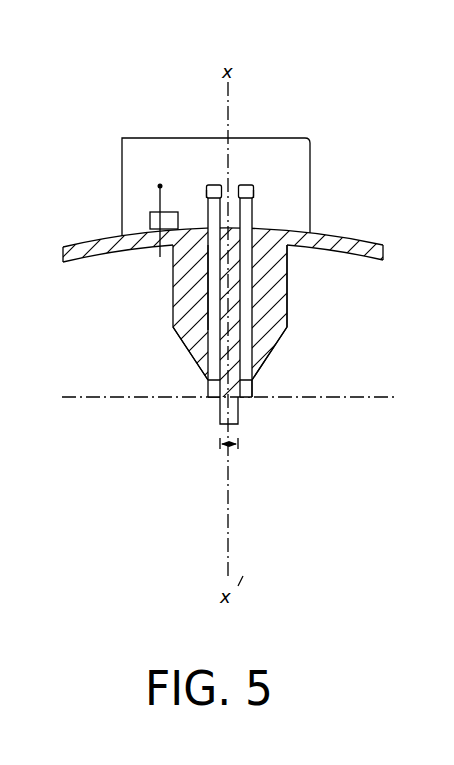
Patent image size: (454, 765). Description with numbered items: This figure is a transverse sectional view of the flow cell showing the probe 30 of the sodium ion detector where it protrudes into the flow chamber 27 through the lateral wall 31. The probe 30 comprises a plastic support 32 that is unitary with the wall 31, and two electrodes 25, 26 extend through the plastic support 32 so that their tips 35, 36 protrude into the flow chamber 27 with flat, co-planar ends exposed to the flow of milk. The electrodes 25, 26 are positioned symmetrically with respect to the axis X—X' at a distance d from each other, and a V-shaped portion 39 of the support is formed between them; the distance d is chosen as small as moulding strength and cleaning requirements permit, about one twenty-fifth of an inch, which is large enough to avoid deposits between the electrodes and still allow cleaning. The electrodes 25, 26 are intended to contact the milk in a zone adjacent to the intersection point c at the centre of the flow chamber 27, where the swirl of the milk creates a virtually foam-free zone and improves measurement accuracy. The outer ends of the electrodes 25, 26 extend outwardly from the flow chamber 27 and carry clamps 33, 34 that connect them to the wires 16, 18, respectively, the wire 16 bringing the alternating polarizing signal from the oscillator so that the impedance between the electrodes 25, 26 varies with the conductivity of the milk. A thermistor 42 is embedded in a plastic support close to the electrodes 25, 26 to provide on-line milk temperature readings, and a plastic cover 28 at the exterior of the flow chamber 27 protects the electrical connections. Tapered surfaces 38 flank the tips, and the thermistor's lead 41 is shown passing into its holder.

The wire 16 is at (213, 185).
The wire 18 is at (249, 185).
The electrode 25 is at (208, 268).
The electrode 26 is at (289, 284).
The flow chamber 27 is at (341, 236).
The plastic cover 28 is at (311, 148).
The probe 30 is at (297, 107).
The lateral wall 31 is at (373, 242).
The plastic support 32 is at (187, 312).
The clamp 33 is at (205, 196).
The clamp 34 is at (255, 193).
The tip 35 is at (209, 399).
The tip 36 is at (248, 399).
The tapered surface 38 is at (193, 357).
The V-shaped portion 39 is at (253, 383).
The sensor pin 41 is at (150, 211).
The thermistor 42 is at (150, 213).
The intersection point c is at (220, 401).
The distance d is at (238, 448).